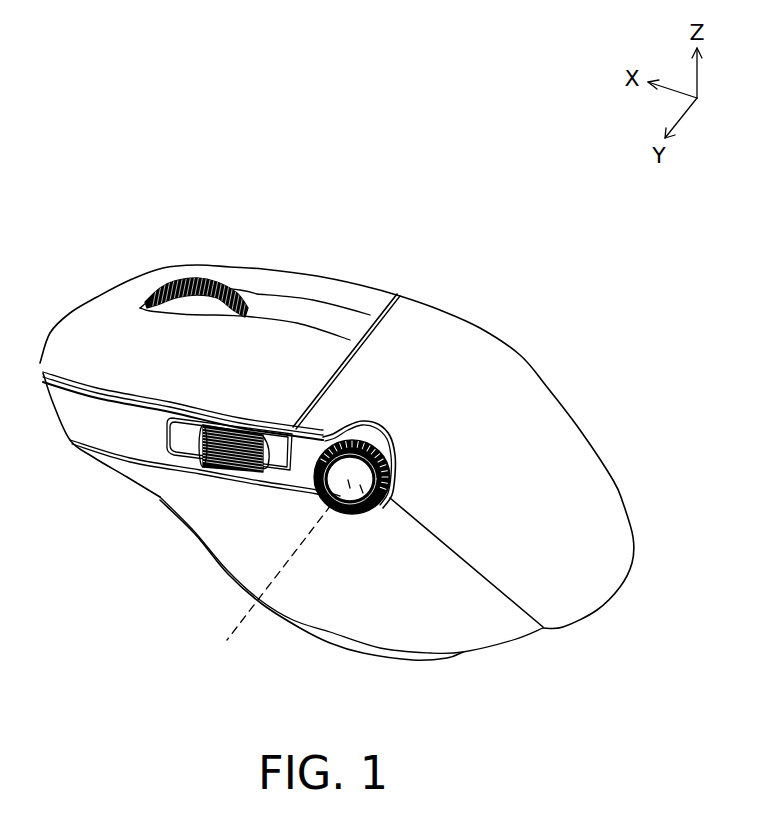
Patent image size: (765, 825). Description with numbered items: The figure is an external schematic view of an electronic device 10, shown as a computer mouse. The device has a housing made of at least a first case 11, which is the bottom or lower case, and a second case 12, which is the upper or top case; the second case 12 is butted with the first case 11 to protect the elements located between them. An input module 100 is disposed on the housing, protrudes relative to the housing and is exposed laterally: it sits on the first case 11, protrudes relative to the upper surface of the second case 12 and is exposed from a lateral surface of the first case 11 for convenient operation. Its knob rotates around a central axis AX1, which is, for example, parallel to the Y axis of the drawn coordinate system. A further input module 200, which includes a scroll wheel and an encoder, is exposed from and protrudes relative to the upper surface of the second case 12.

The electronic device 10 is at (337, 457).
The first case 11 is at (413, 660).
The second case 12 is at (522, 420).
The input module 100 is at (355, 498).
The input module 200 is at (190, 283).
The central axis AX1 is at (263, 587).